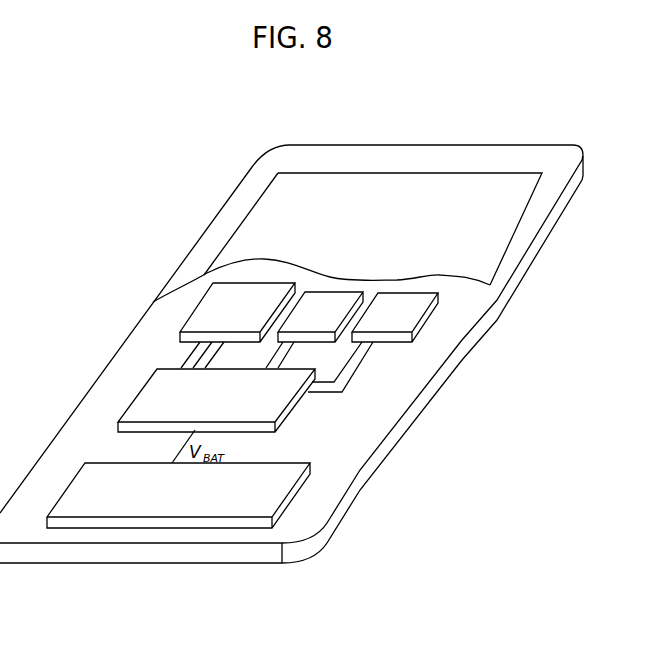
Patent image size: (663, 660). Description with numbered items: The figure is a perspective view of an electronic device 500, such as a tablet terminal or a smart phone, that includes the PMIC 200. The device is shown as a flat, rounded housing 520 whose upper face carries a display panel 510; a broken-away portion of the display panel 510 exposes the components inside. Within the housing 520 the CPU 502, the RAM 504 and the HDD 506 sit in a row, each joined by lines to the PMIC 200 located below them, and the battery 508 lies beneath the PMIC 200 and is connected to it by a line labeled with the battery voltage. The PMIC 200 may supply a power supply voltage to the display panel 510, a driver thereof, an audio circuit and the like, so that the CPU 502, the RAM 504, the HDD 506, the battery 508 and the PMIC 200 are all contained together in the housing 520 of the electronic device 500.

The electronic device 500 is at (312, 636).
The housing 520 is at (560, 158).
The display panel 510 is at (272, 213).
The CPU 502 is at (202, 313).
The RAM 504 is at (348, 297).
The HDD 506 is at (406, 323).
The PMIC 200 is at (150, 393).
The battery 508 is at (266, 492).